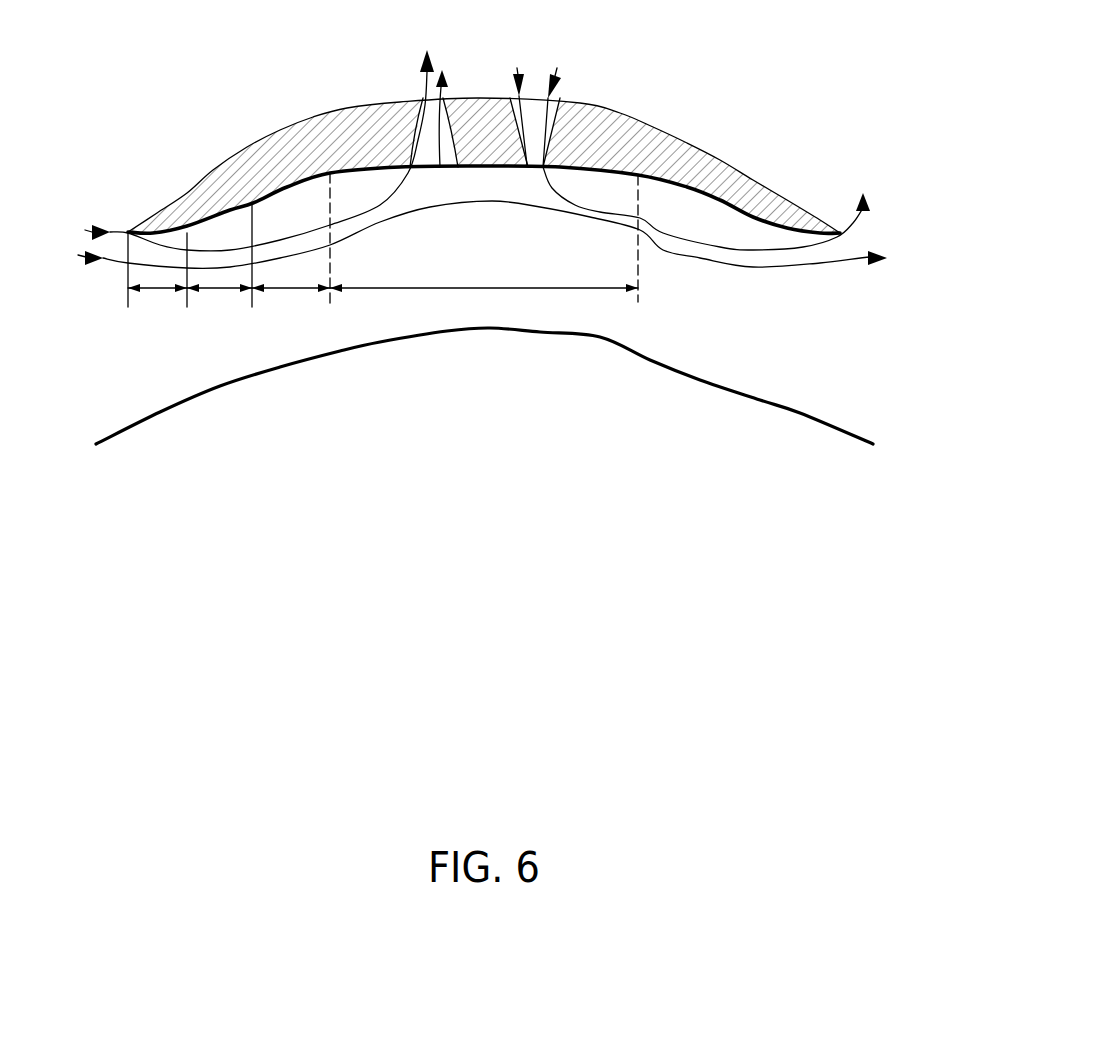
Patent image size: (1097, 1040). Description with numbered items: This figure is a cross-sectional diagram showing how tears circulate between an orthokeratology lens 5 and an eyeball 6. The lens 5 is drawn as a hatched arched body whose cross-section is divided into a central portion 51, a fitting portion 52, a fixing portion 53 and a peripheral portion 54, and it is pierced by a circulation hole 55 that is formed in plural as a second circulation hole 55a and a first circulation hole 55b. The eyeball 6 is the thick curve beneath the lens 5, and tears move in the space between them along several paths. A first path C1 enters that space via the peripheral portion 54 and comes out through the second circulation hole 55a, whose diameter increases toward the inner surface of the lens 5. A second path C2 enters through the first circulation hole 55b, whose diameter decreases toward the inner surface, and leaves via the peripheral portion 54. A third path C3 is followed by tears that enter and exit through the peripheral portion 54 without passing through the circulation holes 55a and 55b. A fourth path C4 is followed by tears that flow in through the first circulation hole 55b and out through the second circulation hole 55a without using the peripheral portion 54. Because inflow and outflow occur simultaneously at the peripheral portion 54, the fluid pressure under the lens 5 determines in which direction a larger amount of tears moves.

The lens 5 is at (720, 124).
The eyeball 6 is at (806, 393).
The central portion 51 is at (484, 249).
The fitting portion 52 is at (291, 248).
The fixing portion 53 is at (219, 264).
The peripheral portion 54 is at (157, 278).
The circulation hole 55 is at (572, 238).
The second circulation hole 55a is at (429, 154).
The first circulation hole 55b is at (529, 122).
The first path C1 is at (264, 137).
The second path C2 is at (696, 159).
The third path C3 is at (500, 237).
The fourth path C4 is at (460, 114).